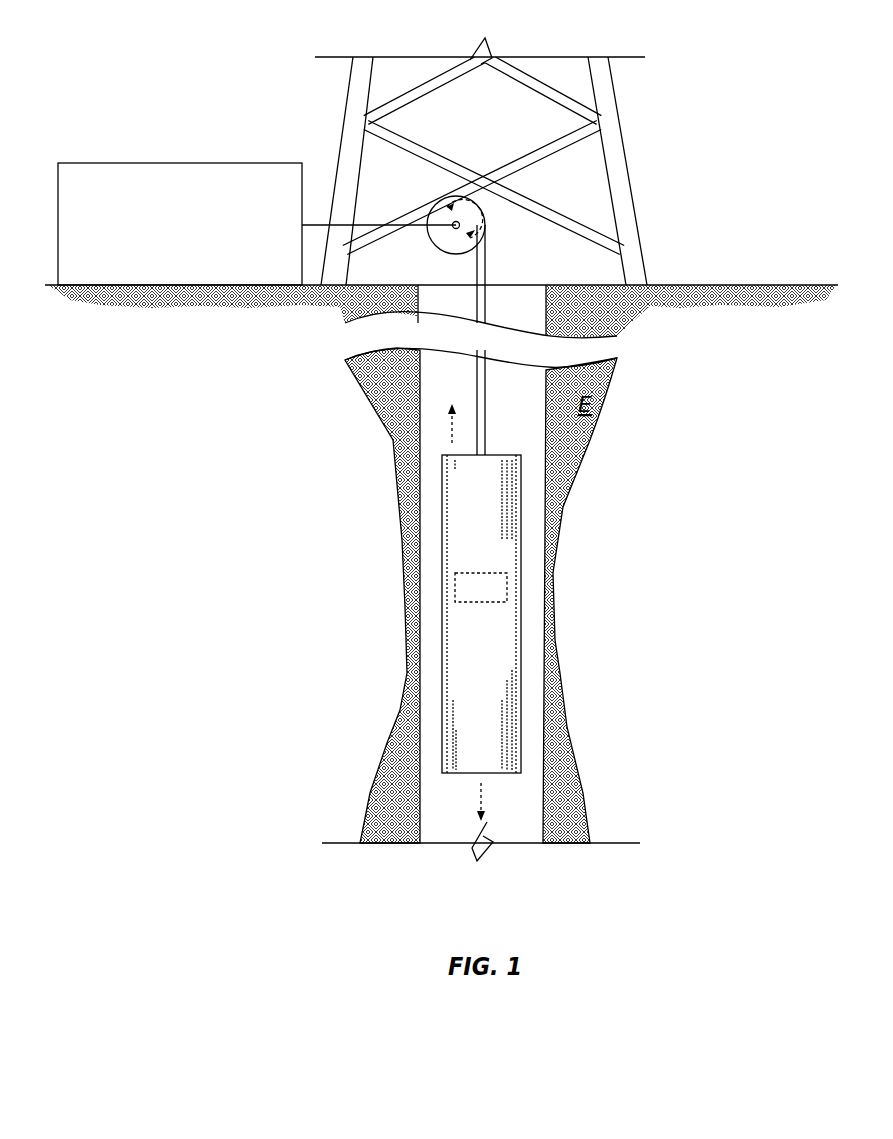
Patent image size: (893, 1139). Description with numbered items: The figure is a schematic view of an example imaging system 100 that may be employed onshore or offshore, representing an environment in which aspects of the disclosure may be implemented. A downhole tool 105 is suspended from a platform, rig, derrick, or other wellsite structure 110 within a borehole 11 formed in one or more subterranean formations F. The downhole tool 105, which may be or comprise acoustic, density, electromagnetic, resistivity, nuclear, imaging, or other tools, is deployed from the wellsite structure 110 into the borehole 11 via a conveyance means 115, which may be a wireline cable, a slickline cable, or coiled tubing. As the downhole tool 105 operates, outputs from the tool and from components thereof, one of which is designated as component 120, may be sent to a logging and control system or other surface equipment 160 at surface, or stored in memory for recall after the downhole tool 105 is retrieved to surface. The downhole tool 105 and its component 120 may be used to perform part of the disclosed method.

The imaging system 100 is at (712, 200).
The wellsite structure 110 is at (629, 155).
The conveyance means 115 is at (487, 265).
The surface equipment 160 is at (181, 162).
The downhole tool 105 is at (499, 450).
The component 120 is at (493, 604).
The borehole 11 is at (511, 830).